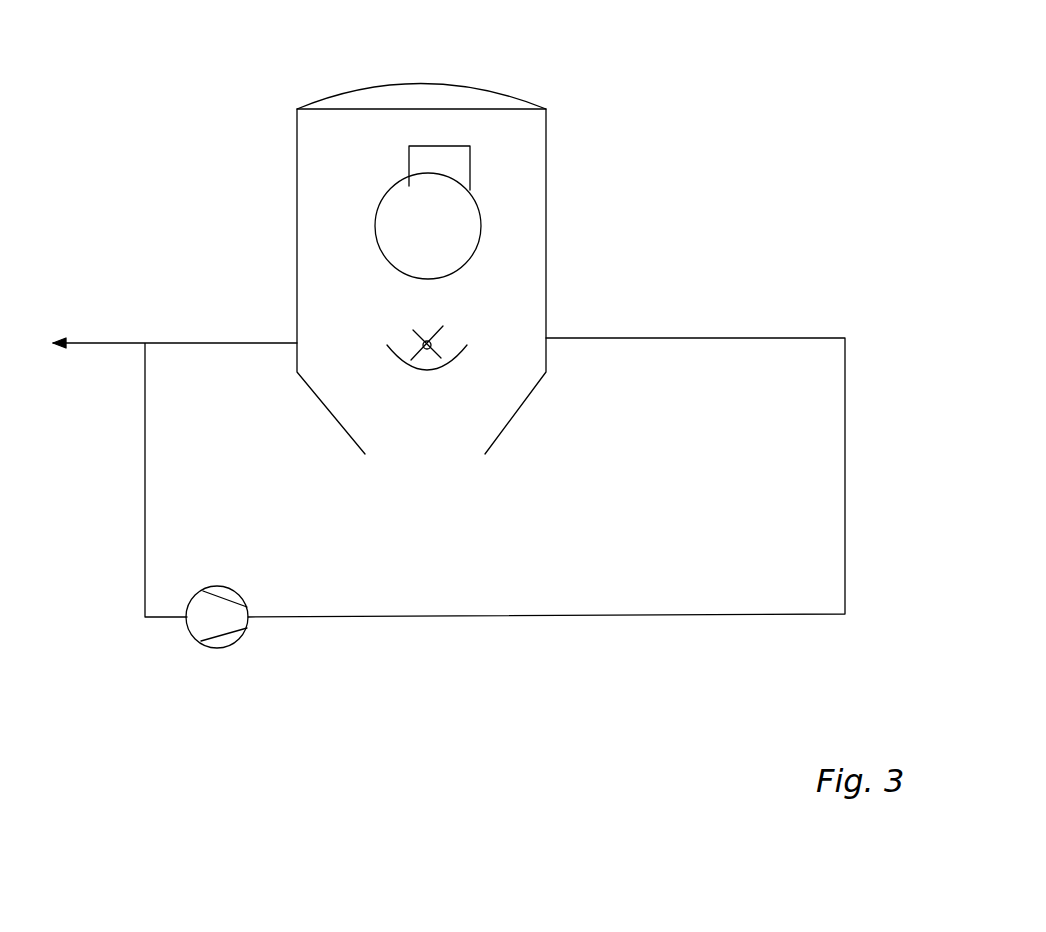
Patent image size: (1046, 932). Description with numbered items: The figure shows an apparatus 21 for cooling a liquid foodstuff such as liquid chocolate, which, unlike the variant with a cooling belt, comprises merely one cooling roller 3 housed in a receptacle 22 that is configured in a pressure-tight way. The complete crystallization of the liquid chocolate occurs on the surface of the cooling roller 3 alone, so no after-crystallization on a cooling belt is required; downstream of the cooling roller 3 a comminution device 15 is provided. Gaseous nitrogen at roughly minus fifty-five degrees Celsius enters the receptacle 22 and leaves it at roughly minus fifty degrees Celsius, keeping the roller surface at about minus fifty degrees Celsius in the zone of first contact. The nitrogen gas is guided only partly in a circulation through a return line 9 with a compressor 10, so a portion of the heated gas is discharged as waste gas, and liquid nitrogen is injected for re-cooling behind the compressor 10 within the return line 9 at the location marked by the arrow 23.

The cooling roller 3 is at (398, 175).
The return line 9 is at (492, 614).
The compressor 10 is at (217, 648).
The comminution device 15 is at (390, 328).
The apparatus 21 is at (595, 150).
The receptacle 22 is at (546, 292).
The arrow 23 is at (325, 618).